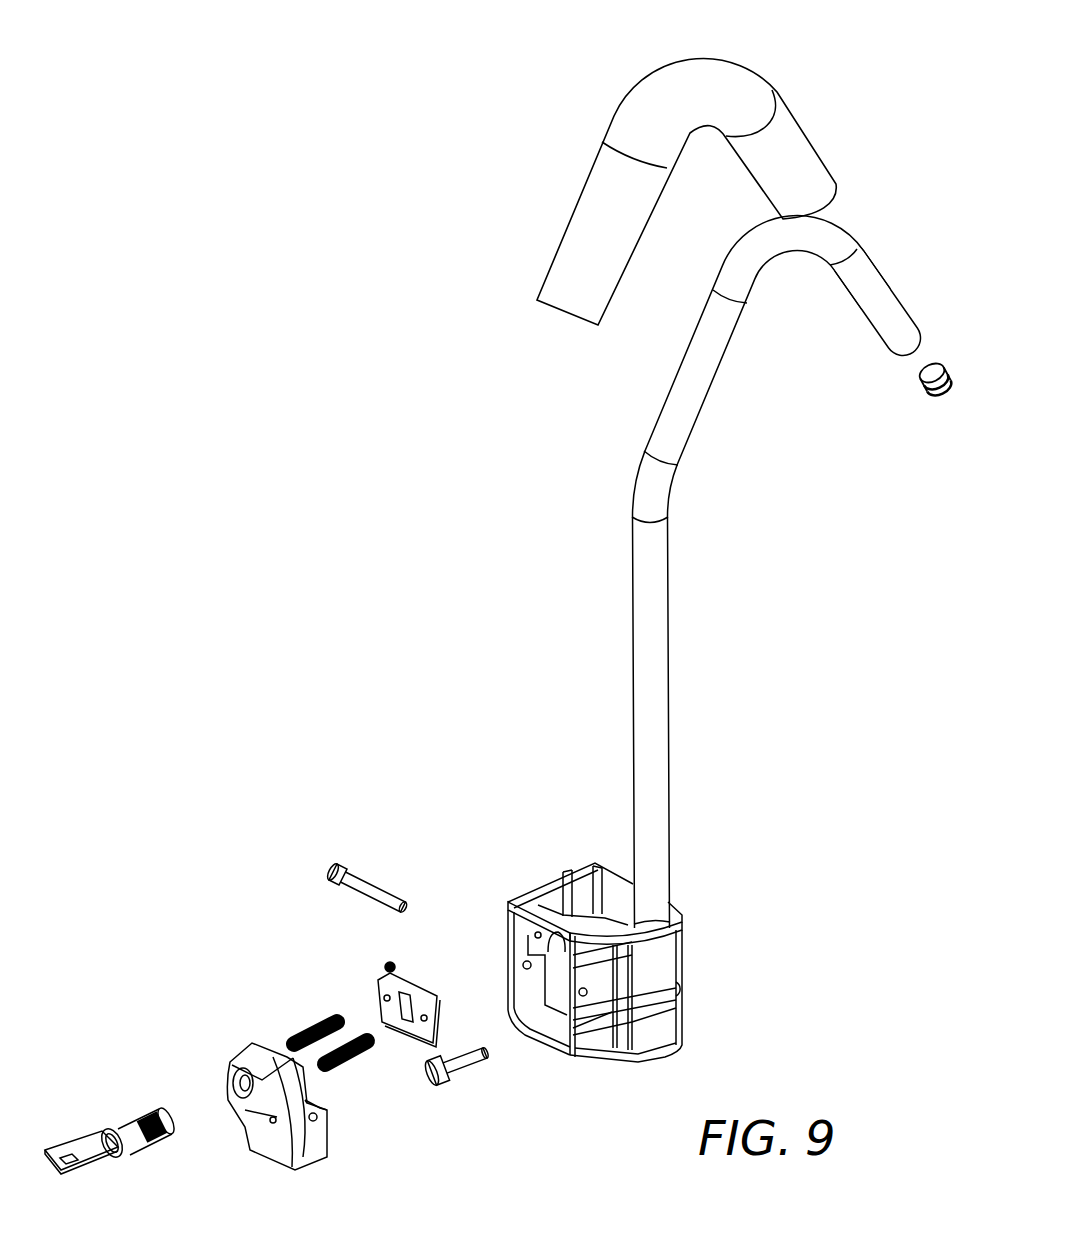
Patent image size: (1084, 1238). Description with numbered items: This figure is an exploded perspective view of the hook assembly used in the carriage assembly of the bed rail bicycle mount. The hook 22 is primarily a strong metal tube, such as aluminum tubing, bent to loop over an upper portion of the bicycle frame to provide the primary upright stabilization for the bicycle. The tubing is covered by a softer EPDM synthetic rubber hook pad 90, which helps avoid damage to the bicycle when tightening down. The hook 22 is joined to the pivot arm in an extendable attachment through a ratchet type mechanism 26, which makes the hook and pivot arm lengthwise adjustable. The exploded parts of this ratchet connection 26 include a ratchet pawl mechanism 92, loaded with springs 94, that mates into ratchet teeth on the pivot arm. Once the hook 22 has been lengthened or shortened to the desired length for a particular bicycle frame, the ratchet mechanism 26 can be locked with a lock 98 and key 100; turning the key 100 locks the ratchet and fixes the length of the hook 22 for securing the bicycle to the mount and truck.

The hook 22 is at (688, 364).
The ratchet connection 26 is at (555, 882).
The hook pad 90 is at (577, 223).
The ratchet pawl mechanism 92 is at (317, 1167).
The springs 94 is at (320, 1022).
The lock 98 is at (145, 1147).
The key 100 is at (78, 1143).